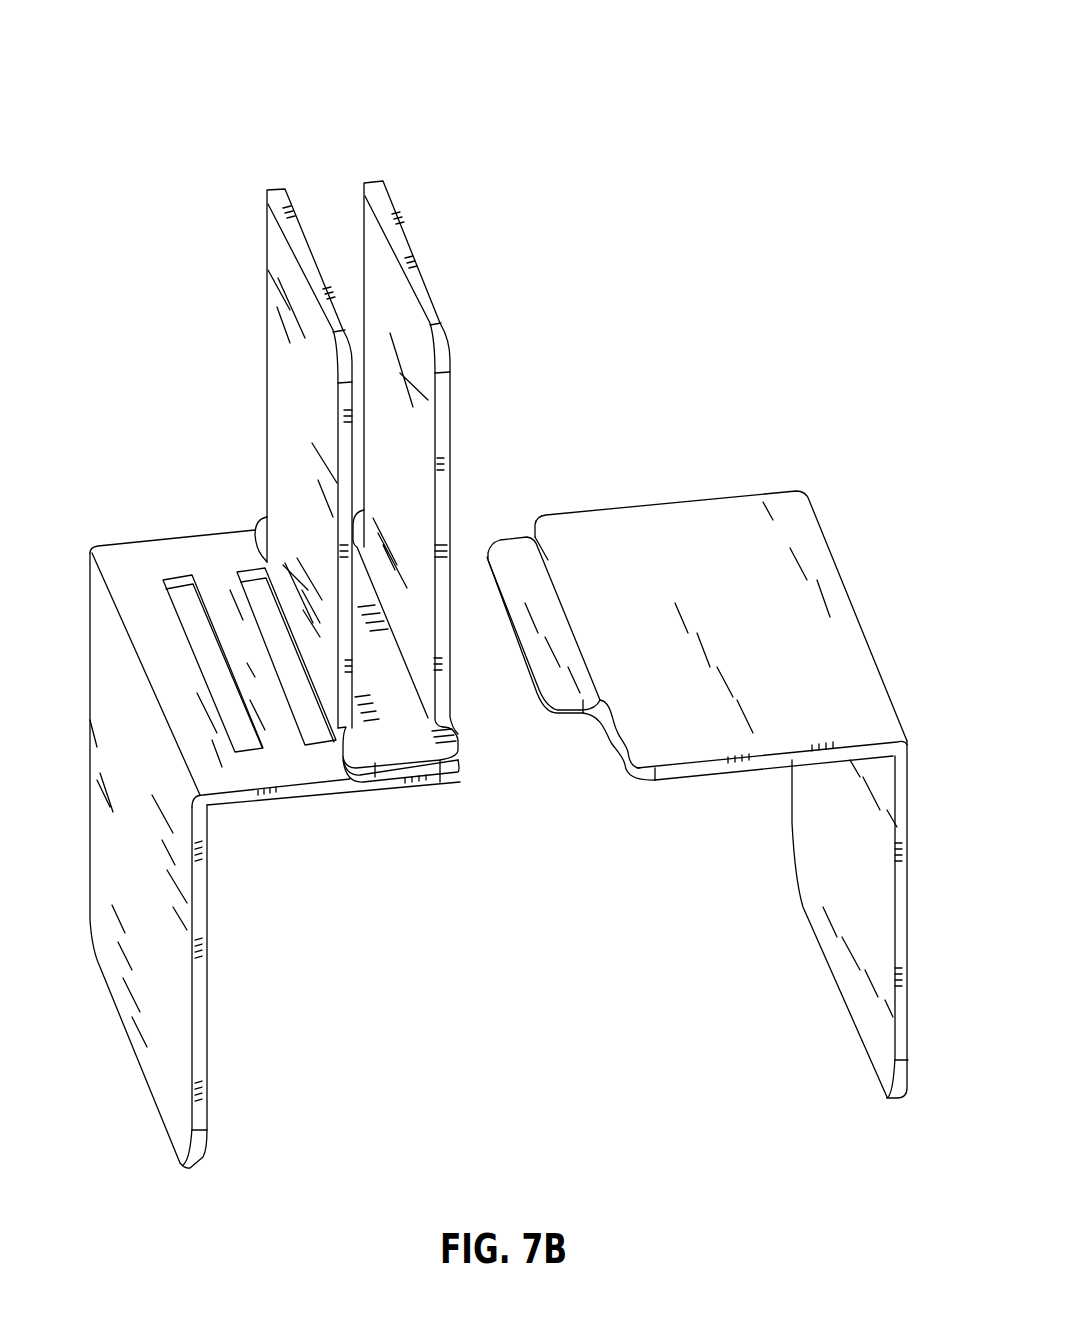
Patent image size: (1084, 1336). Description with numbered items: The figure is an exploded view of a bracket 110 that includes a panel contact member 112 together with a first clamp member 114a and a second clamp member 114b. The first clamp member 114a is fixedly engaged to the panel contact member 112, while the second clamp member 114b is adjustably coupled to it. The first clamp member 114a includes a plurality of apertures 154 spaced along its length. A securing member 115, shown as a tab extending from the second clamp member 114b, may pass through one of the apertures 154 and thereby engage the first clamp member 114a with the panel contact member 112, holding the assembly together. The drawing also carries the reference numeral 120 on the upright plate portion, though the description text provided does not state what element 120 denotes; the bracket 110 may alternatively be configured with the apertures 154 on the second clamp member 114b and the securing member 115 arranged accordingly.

The bracket 110 is at (628, 128).
The panel contact member 112 is at (227, 257).
The second plate member 120 is at (490, 337).
The first clamp member 114a is at (110, 1043).
The second clamp member 114b is at (882, 600).
The securing member 115 is at (508, 555).
The apertures 154 is at (180, 583).